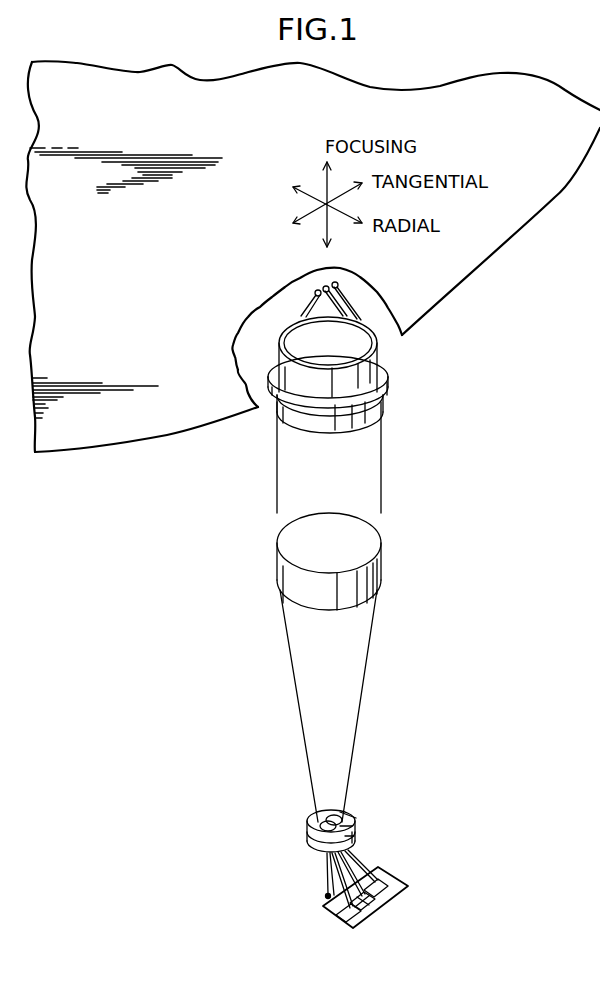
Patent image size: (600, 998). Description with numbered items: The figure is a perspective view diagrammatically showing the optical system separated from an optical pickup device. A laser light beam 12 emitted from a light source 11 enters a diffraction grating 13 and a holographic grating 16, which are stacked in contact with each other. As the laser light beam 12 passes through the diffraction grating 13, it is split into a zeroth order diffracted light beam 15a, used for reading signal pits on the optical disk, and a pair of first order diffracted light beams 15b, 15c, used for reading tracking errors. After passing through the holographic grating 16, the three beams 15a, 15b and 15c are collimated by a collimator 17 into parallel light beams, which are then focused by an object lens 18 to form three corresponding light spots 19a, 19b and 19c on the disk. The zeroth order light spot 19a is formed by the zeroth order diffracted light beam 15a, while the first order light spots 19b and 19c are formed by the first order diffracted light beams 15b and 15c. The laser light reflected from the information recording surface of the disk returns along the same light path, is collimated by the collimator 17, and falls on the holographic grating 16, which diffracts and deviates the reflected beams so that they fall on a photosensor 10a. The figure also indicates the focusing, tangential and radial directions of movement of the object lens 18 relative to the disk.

The photosensor 10a is at (351, 895).
The light source 11 is at (327, 898).
The laser light beam 12 is at (327, 876).
The diffraction grating 13 is at (355, 845).
The zeroth order diffracted light beam 15a is at (352, 835).
The first order diffracted light beam 15b is at (352, 826).
The first order diffracted light beam 15c is at (355, 812).
The holographic grating 16 is at (360, 818).
The collimator 17 is at (357, 540).
The object lens 18 is at (378, 375).
The zeroth order light spot 19a is at (329, 286).
The first order light spot 19b is at (315, 293).
The first order light spot 19c is at (338, 285).